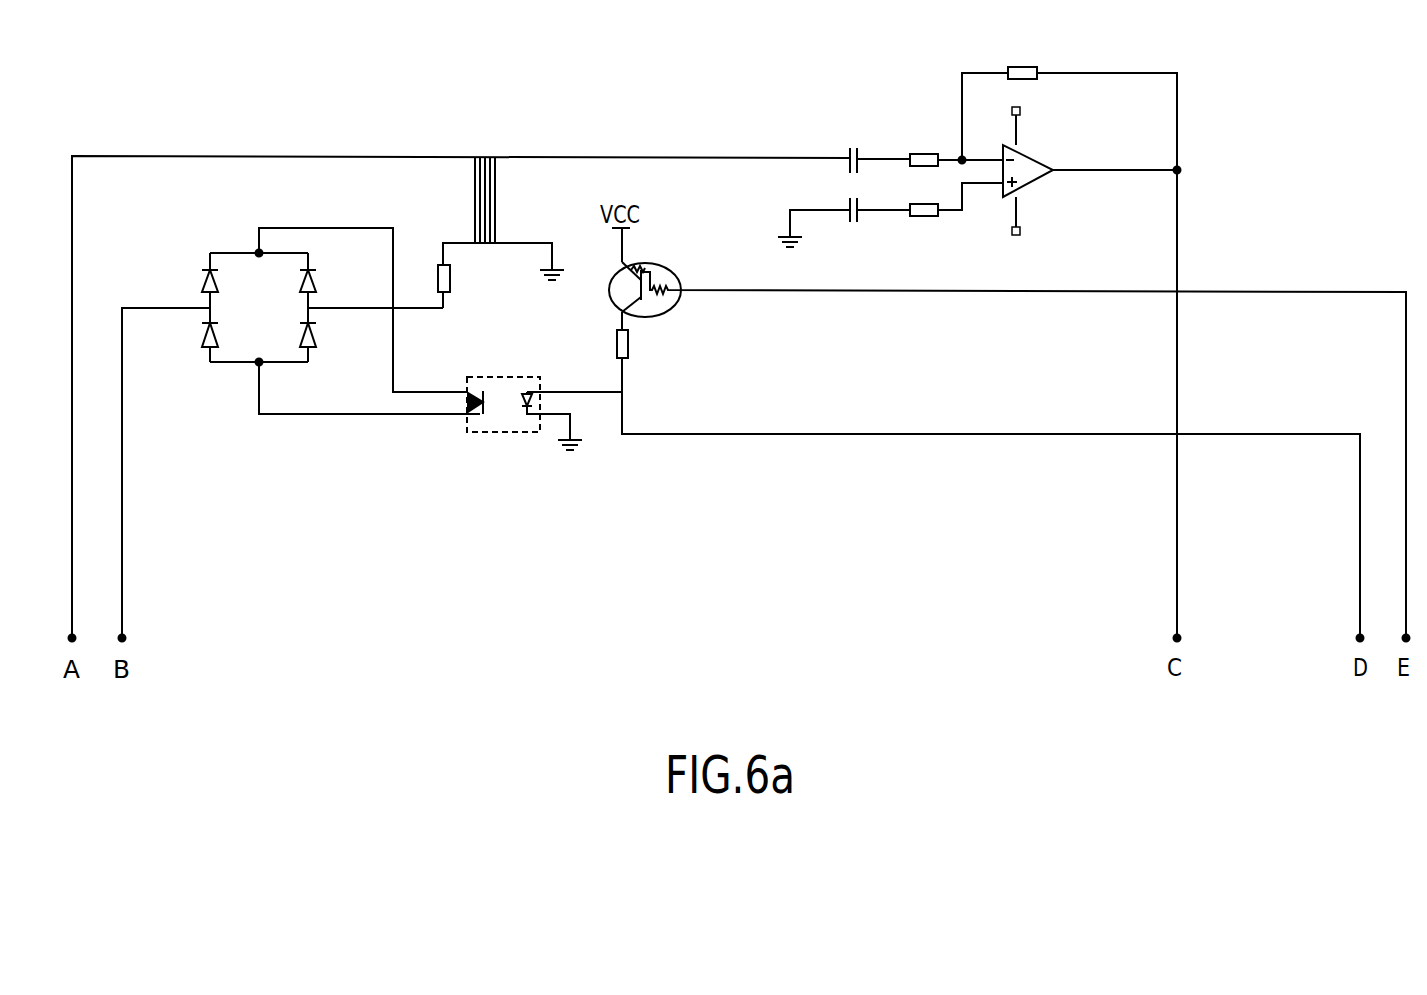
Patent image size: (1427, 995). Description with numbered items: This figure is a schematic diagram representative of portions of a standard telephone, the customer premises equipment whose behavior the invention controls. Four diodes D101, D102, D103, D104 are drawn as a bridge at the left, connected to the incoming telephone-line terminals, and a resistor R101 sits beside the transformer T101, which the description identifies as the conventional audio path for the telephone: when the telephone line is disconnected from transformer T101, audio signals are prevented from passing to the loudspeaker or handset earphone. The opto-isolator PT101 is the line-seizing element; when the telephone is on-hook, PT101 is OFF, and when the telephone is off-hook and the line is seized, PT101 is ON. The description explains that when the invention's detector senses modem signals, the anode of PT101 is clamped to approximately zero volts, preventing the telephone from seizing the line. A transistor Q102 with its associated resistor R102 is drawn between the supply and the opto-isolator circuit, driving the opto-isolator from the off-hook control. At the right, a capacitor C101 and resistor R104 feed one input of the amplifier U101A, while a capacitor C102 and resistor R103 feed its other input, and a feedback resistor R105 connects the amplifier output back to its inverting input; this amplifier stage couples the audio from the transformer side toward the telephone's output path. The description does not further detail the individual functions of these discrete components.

The diode of bridge rectifier D101 is at (180, 274).
The diode of bridge rectifier D102 is at (337, 274).
The diode of bridge rectifier D103 is at (180, 350).
The diode of bridge rectifier D104 is at (337, 350).
The transformer T101 is at (503, 202).
The resistor 82 ohm R101 is at (474, 298).
The opto-isolator PT101 is at (542, 406).
The transistor DTA114 Q102 is at (1007, 433).
The resistor R102 is at (988, 484).
The capacitor C101 is at (866, 146).
The capacitor C102 is at (844, 227).
The resistor R103 is at (952, 219).
The resistor R104 is at (952, 143).
The feedback resistor R105 is at (1069, 336).
The operational amplifier 324 U101A is at (1082, 159).